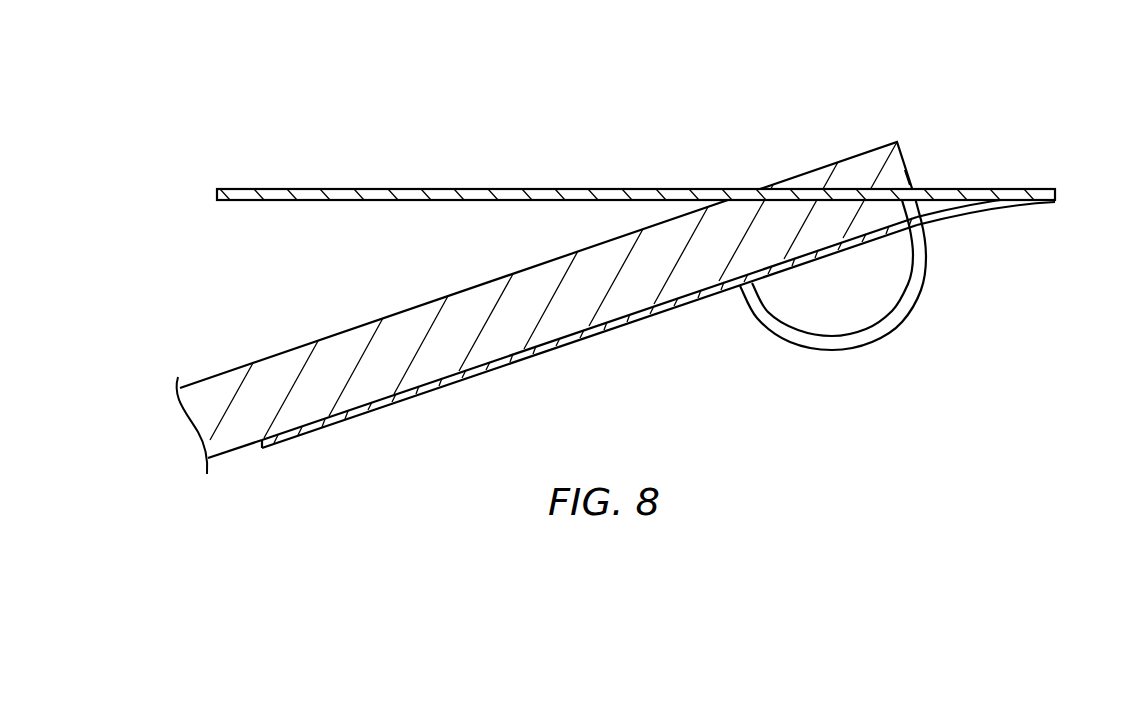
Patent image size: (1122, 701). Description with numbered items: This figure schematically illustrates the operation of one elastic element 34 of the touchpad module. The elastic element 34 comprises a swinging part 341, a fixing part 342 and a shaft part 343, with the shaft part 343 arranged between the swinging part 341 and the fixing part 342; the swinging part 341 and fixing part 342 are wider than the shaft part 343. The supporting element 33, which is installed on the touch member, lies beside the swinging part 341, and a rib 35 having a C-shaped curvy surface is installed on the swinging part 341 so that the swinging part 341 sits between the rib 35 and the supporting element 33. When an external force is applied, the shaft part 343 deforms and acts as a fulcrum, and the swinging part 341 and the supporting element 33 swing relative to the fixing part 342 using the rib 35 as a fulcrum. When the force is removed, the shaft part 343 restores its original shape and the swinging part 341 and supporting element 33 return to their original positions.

The supporting element 33 is at (272, 370).
The elastic element 34 is at (1013, 148).
The swinging part 341 is at (553, 345).
The fixing part 342 is at (587, 188).
The shaft part 343 is at (959, 210).
The rib 35 is at (828, 346).